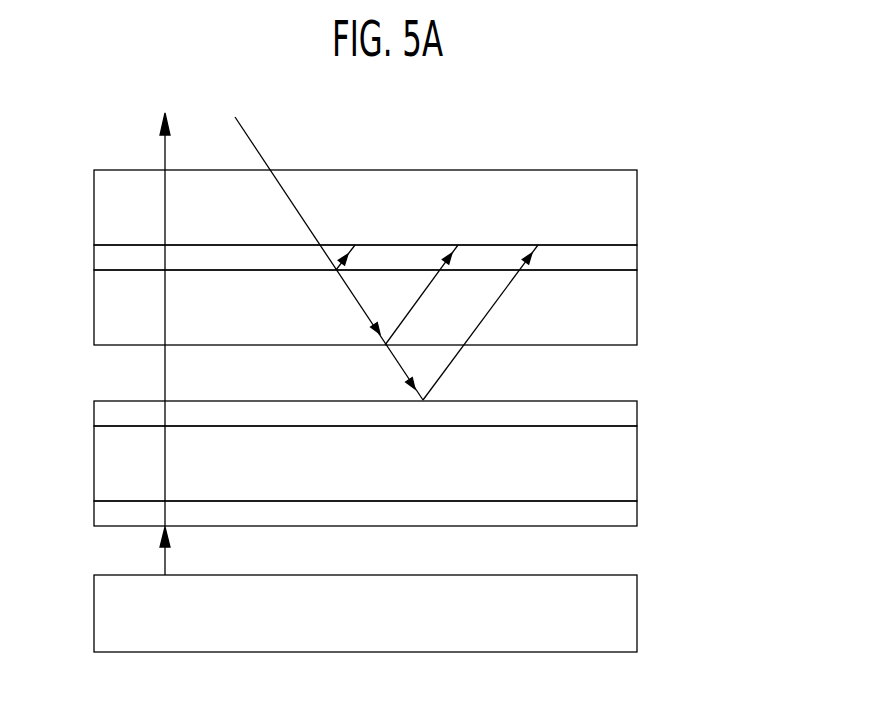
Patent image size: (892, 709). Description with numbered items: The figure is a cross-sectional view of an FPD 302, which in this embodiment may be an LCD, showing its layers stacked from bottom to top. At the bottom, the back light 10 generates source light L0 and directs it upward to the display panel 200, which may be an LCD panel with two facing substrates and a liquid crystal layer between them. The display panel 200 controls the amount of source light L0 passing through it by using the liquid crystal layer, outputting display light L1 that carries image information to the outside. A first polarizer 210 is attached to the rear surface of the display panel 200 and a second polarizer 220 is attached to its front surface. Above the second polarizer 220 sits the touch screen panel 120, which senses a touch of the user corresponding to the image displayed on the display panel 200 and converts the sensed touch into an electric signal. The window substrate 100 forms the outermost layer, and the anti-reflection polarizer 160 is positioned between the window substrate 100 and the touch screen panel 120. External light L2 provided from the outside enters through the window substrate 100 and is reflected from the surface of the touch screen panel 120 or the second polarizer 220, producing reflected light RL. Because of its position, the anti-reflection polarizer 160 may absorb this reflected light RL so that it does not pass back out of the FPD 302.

The window substrate 100 is at (637, 212).
The anti-reflection polarizer 160 is at (637, 260).
The touch screen panel 120 is at (637, 313).
The second polarizer 220 is at (637, 418).
The display panel 200 is at (637, 468).
The first polarizer 210 is at (637, 518).
The back light 10 is at (637, 618).
The FPD 302 is at (710, 198).
The display light L1 is at (165, 150).
The source light L0 is at (165, 556).
The external light L2 is at (258, 151).
The reflected light RL is at (518, 270).